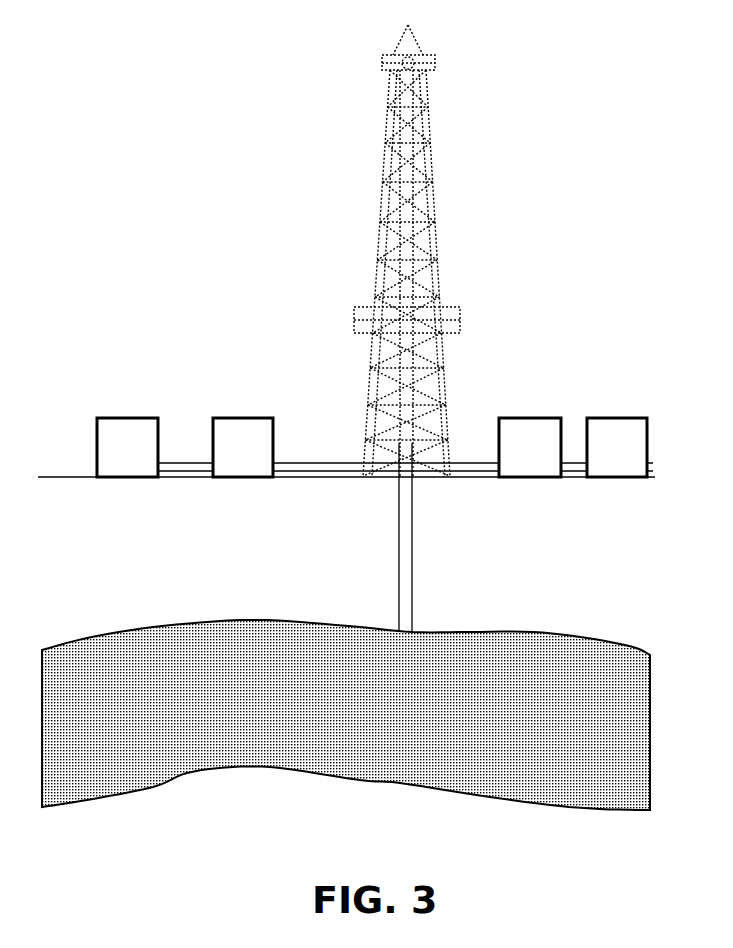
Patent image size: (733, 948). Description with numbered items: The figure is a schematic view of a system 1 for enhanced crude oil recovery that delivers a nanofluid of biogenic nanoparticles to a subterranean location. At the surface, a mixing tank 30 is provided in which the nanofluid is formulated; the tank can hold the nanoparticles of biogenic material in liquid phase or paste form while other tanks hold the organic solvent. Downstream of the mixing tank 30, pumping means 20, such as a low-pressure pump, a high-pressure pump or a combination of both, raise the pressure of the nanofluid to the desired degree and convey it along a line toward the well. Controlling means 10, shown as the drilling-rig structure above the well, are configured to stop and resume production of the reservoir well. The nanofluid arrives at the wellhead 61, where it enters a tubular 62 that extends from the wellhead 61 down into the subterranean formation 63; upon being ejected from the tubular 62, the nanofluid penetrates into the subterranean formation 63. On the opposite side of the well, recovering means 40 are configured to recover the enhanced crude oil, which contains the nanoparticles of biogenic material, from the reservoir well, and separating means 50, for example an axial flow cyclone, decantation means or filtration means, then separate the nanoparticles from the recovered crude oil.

The system 1 is at (222, 146).
The controlling means 10 is at (398, 447).
The pumping means 20 is at (242, 418).
The mixing tank 30 is at (135, 418).
The recovering means 40 is at (530, 418).
The separating means 50 is at (615, 418).
The wellhead 61 is at (413, 477).
The tubular 62 is at (399, 543).
The subterranean formation 63 is at (533, 632).